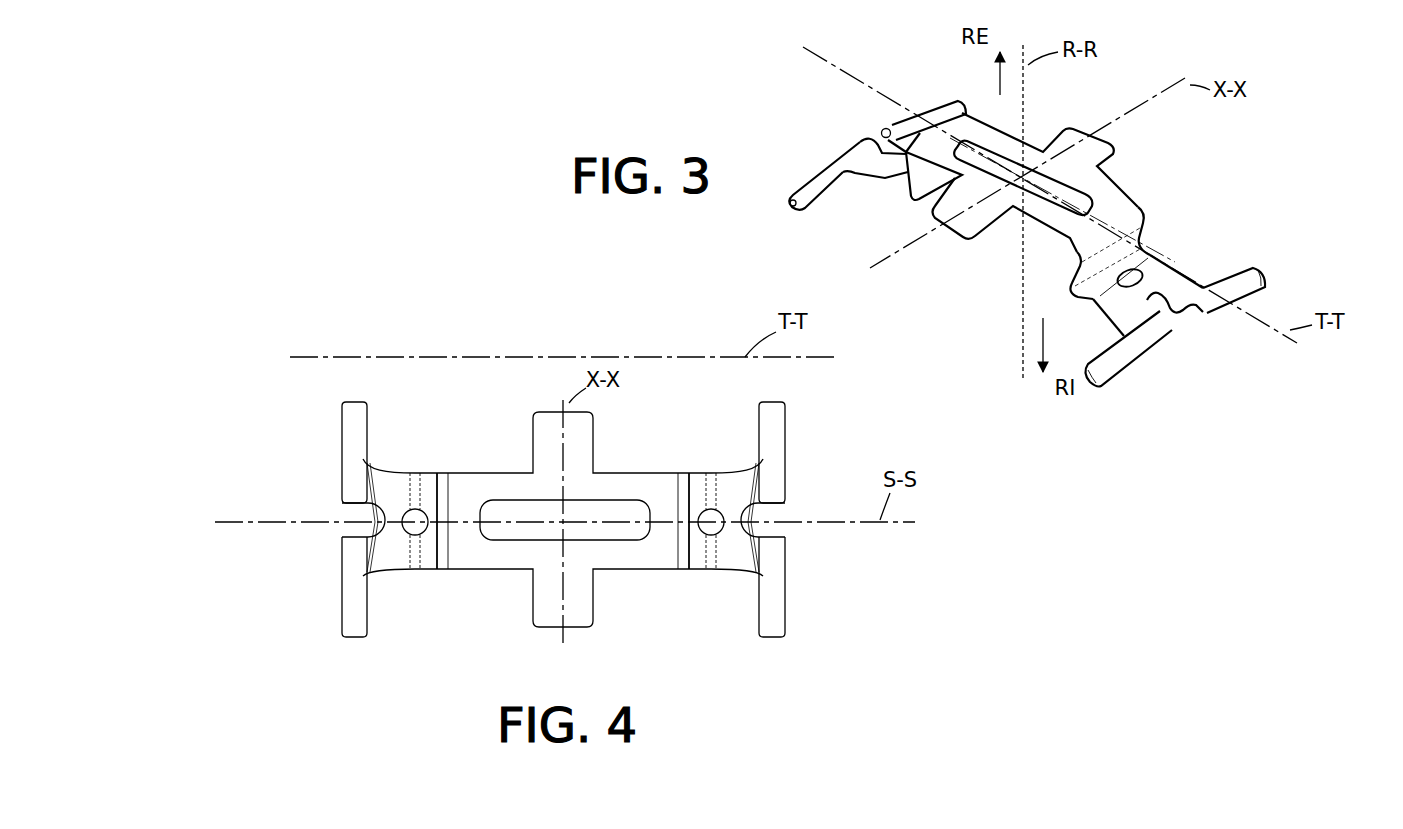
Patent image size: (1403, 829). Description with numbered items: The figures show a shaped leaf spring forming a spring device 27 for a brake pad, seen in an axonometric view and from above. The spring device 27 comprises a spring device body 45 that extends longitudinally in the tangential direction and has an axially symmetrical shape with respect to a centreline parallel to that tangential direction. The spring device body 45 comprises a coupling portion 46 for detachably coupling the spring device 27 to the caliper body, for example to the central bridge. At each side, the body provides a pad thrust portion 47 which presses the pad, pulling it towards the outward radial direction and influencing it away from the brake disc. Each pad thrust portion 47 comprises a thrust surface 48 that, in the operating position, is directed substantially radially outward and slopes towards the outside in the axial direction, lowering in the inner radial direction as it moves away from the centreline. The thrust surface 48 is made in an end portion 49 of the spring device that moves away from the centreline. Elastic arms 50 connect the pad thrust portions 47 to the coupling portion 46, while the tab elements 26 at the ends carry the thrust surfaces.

In FIG. 4, the retaining tab 26 is at (345, 432).
In FIG. 3, the retaining tab 26 is at (950, 110).
In FIG. 4, the spring device 27 is at (660, 478).
In FIG. 3, the spring device 27 is at (1120, 185).
In FIG. 4, the spring device body 45 is at (470, 480).
In FIG. 3, the spring device body 45 is at (1035, 242).
In FIG. 4, the coupling portion 46 is at (620, 480).
In FIG. 3, the coupling portion 46 is at (1150, 215).
In FIG. 4, the pad thrust portion 47 is at (362, 401).
In FIG. 3, the pad thrust portion 47 is at (966, 102).
In FIG. 4, the thrust surface 48 is at (345, 455).
In FIG. 3, the thrust surface 48 is at (920, 115).
In FIG. 4, the end portion 49 is at (338, 398).
In FIG. 3, the end portion 49 is at (930, 93).
In FIG. 4, the elastic arms 50 is at (398, 470).
In FIG. 3, the elastic arms 50 is at (1030, 118).